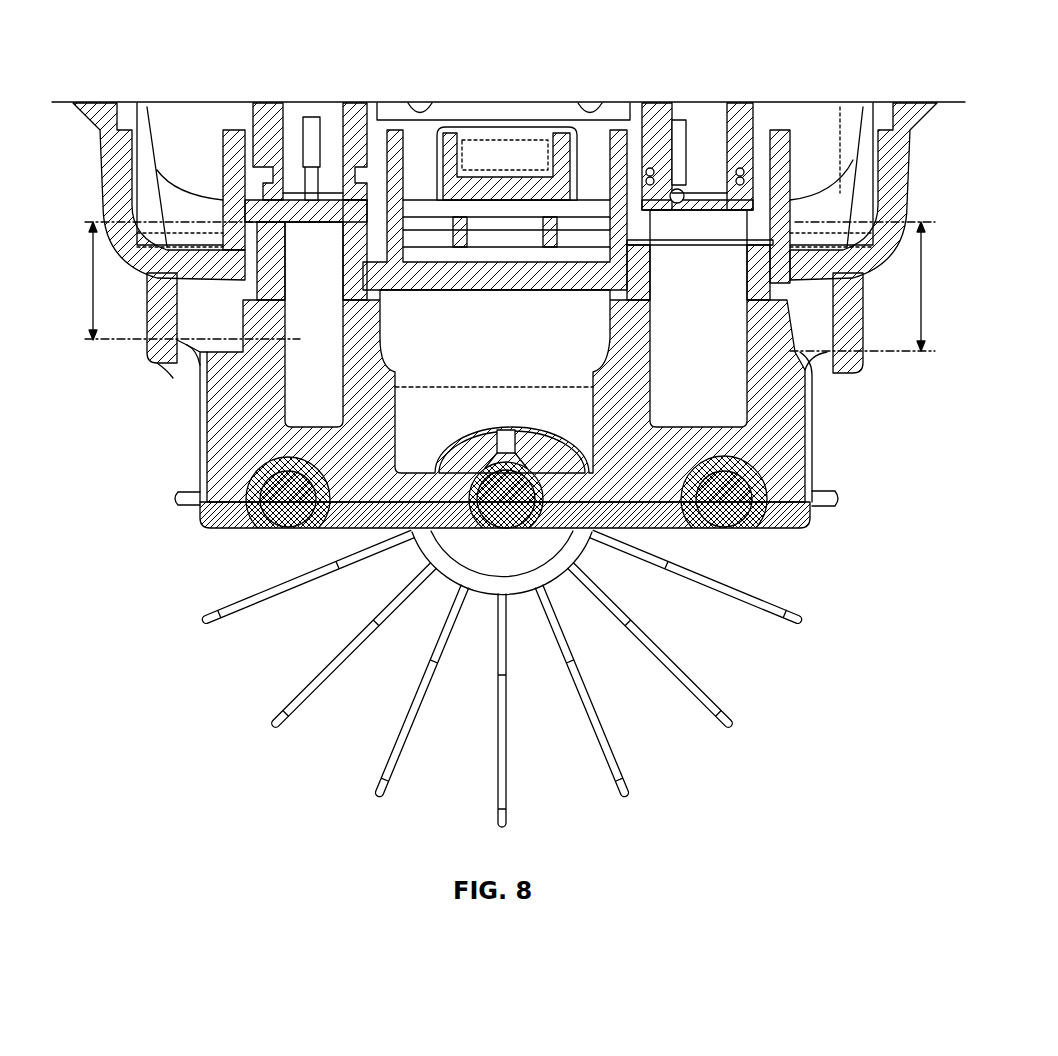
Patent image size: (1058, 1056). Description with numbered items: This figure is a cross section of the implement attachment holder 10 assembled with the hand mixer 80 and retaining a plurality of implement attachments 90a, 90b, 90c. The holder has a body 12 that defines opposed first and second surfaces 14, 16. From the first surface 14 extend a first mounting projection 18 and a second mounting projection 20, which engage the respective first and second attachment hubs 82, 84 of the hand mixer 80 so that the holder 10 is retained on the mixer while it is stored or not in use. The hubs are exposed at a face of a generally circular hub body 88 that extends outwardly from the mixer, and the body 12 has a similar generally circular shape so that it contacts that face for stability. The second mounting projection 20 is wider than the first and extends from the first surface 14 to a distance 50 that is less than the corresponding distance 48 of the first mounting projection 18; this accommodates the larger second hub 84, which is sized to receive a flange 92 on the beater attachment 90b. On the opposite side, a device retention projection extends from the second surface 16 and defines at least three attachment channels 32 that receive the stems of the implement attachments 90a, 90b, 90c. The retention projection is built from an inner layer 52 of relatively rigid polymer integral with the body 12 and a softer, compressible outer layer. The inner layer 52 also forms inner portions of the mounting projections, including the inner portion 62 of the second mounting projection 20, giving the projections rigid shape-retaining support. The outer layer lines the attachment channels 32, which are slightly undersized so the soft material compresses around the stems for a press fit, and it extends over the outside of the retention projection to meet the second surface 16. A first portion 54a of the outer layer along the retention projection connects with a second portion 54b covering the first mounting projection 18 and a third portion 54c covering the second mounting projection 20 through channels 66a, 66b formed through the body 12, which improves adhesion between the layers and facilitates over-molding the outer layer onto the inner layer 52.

The implement attachment holder 10 is at (188, 452).
The body 12 is at (188, 347).
The first surface 14 is at (213, 337).
The second surface 16 is at (173, 378).
The first mounting projection 18 is at (370, 220).
The second mounting projection 20 is at (792, 240).
The attachment channels 32 is at (280, 512).
The distance 48 is at (92, 282).
The distance 50 is at (924, 288).
The inner layer 52 is at (200, 508).
The first portion of the outer layer 54a is at (213, 530).
The second portion of the outer layer 54b is at (383, 263).
The third portion of the outer layer 54c is at (780, 245).
The inner portion 62 is at (372, 262).
The channel 66a is at (197, 375).
The channel 66b is at (808, 352).
The hand mixer 80 is at (73, 126).
The first attachment hub 82 is at (243, 307).
The second attachment hub 84 is at (677, 212).
The hub body 88 is at (873, 247).
The implement attachment 90a is at (295, 512).
The beater attachment 90b is at (727, 507).
The implement attachment 90c is at (542, 548).
The flange 92 is at (730, 512).